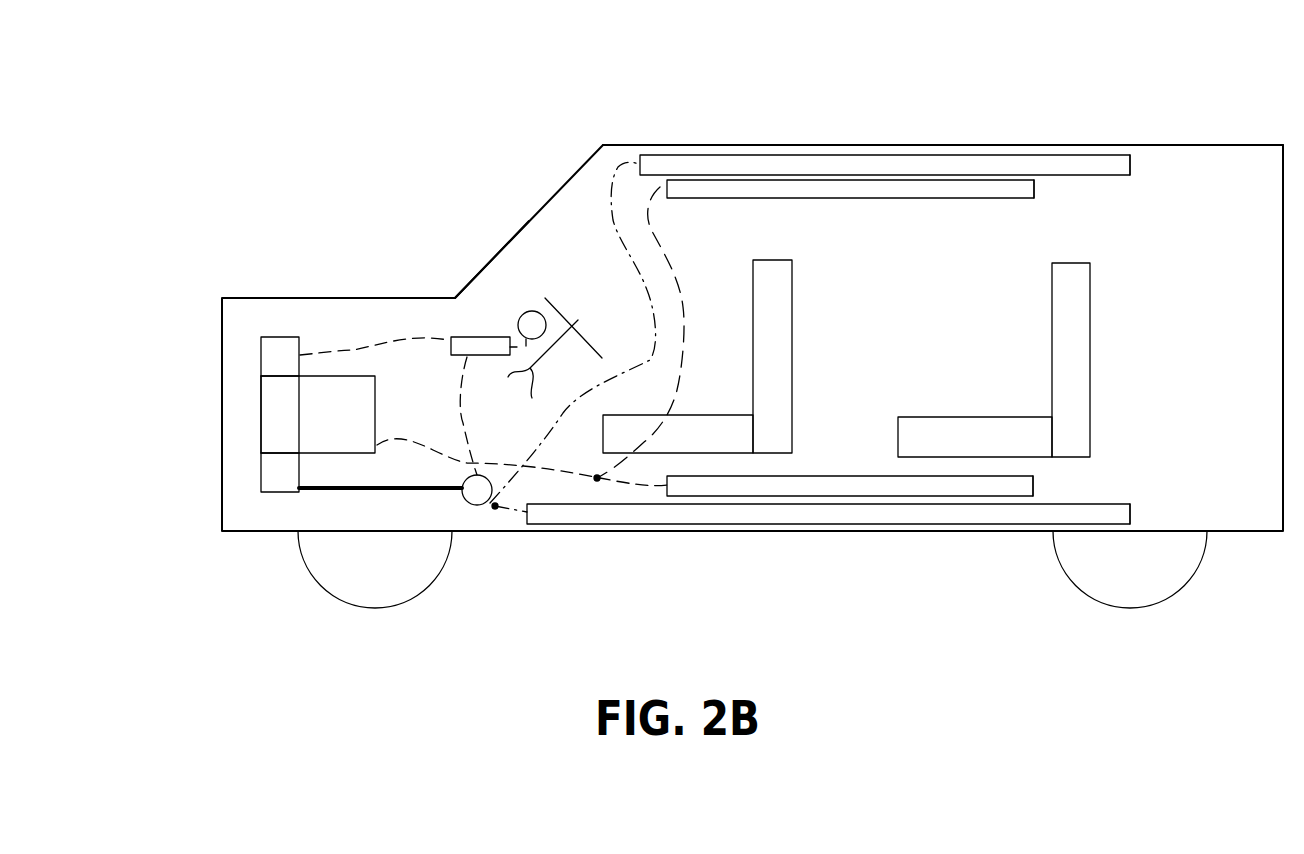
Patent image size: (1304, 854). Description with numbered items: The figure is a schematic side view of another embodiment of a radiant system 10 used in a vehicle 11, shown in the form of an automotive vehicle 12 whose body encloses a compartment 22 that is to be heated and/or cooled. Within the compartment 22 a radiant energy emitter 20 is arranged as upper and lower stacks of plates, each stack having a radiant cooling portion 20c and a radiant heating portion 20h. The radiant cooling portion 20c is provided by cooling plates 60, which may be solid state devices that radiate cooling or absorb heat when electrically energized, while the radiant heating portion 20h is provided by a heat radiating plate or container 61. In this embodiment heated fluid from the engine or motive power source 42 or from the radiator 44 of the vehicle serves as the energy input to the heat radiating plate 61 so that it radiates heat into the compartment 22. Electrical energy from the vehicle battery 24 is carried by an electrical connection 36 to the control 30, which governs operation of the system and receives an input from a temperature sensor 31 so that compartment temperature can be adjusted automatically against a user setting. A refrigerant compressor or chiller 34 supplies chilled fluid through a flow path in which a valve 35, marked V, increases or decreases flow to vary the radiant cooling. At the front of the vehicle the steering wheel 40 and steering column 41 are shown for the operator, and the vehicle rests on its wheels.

The radiant system 10 is at (518, 252).
The vehicle 11 is at (562, 178).
The automotive vehicle 12 is at (618, 143).
The radiant energy emitter 20 is at (891, 337).
The radiant cooling portion 20c is at (1156, 167).
The radiant heating portion 20h is at (1072, 205).
The compartment 22 is at (493, 283).
The battery 24 is at (260, 358).
The control 30 is at (465, 337).
The temperature sensor 31 is at (530, 310).
The refrigerant compressor 34 is at (277, 480).
The valve 35 is at (473, 507).
The electrical connection 36 is at (355, 350).
The steering wheel 40 is at (565, 318).
The steering column 41 is at (540, 362).
The motive power source 42 is at (373, 418).
The radiator 44 is at (262, 418).
The cooling plate 60 is at (857, 170).
The heat radiating plate 61 is at (865, 195).